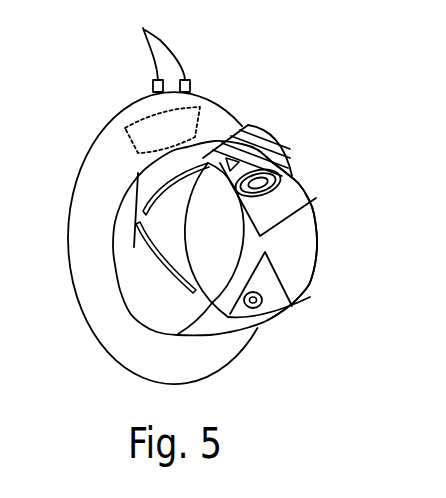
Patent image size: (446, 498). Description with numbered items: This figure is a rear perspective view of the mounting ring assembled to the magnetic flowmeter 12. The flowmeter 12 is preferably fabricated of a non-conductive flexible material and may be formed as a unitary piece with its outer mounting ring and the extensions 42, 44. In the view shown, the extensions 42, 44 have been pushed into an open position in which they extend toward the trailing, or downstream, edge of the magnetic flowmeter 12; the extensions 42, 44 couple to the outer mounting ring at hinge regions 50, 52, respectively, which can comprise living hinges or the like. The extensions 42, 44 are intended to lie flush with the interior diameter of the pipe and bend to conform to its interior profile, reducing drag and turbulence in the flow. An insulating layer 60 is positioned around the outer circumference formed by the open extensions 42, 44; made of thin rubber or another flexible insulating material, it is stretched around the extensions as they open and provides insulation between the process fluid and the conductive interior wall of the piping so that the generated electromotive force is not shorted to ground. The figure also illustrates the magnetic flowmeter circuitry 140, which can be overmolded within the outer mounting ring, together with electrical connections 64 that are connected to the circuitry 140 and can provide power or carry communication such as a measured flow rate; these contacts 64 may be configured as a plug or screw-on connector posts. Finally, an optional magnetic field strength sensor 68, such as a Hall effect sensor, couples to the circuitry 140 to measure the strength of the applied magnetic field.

The magnetic flowmeter 12 is at (215, 115).
The electrical connections 64 is at (161, 49).
The magnetic flowmeter circuitry 140 is at (172, 115).
The hinge region 52 is at (143, 167).
The hinge region 50 is at (242, 212).
The insulating layer 60 is at (307, 257).
The extension 44 is at (145, 188).
The extension 42 is at (280, 214).
The magnetic field strength sensor 68 is at (266, 158).